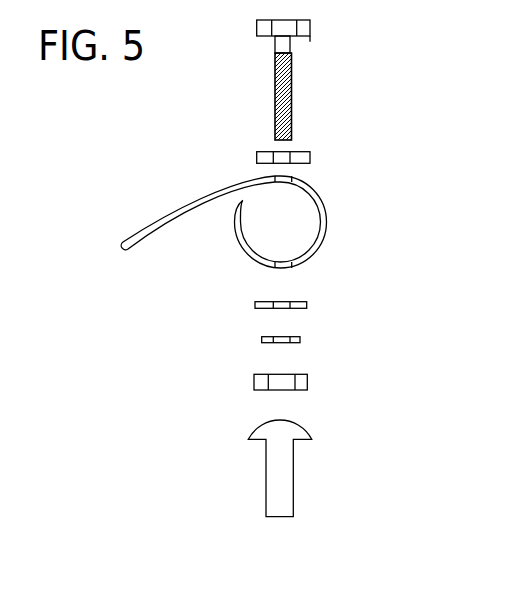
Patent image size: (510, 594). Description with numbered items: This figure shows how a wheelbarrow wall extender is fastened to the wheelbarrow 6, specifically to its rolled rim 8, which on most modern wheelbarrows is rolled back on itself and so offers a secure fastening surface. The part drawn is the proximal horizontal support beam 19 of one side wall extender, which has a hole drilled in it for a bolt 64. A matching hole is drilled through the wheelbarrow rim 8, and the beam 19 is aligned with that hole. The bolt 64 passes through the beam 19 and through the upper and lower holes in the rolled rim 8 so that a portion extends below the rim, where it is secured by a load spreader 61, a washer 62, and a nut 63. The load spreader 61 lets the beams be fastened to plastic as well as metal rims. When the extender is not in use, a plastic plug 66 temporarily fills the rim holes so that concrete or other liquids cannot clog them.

The wheelbarrow 6 is at (151, 223).
The wheelbarrow rim 8 is at (332, 223).
The proximal horizontal support beam 19 is at (312, 155).
The load spreader 61 is at (308, 303).
The washer 62 is at (302, 342).
The nut 63 is at (309, 380).
The bolt 64 is at (318, 24).
The plastic plug 66 is at (295, 495).